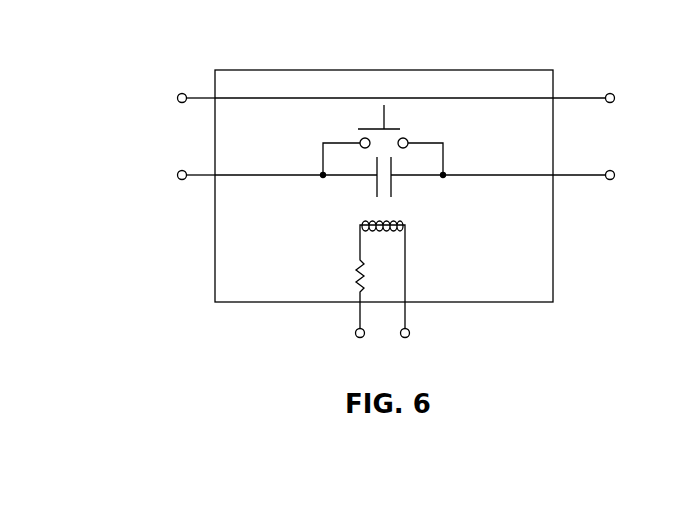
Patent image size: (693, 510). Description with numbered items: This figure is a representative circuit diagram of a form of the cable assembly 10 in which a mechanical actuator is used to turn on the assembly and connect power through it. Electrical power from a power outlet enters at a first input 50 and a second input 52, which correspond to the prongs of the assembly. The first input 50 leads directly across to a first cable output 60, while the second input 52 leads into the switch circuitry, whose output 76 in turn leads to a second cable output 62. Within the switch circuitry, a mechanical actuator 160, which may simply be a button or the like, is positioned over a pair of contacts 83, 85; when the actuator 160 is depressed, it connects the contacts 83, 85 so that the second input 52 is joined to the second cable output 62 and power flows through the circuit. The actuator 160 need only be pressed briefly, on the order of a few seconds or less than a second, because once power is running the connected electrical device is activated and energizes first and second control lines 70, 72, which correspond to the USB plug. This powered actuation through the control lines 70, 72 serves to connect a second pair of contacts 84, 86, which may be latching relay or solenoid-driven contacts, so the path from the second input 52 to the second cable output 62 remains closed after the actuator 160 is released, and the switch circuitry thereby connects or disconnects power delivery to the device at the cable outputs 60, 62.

The cable assembly 10 is at (513, 66).
The first input 50 is at (170, 109).
The second input 52 is at (170, 186).
The first cable output 60 is at (651, 109).
The second cable output 62 is at (651, 186).
The first control line 70 is at (376, 367).
The second control line 72 is at (419, 367).
The output 76 is at (584, 180).
The contact 83 is at (357, 132).
The contact 84 is at (374, 185).
The contact 85 is at (411, 134).
The contact 86 is at (394, 185).
The mechanical actuator 160 is at (371, 128).